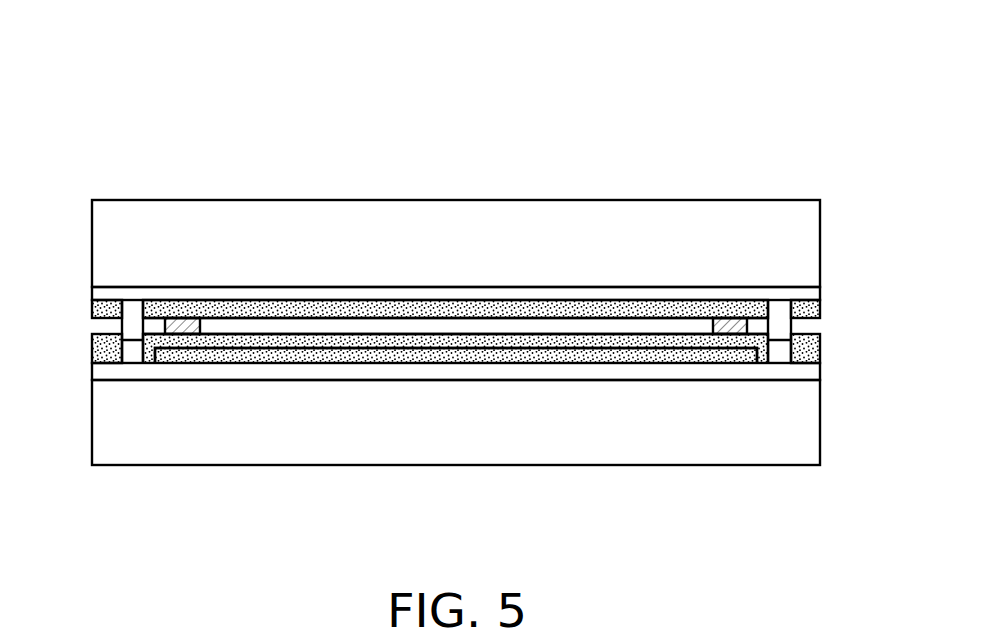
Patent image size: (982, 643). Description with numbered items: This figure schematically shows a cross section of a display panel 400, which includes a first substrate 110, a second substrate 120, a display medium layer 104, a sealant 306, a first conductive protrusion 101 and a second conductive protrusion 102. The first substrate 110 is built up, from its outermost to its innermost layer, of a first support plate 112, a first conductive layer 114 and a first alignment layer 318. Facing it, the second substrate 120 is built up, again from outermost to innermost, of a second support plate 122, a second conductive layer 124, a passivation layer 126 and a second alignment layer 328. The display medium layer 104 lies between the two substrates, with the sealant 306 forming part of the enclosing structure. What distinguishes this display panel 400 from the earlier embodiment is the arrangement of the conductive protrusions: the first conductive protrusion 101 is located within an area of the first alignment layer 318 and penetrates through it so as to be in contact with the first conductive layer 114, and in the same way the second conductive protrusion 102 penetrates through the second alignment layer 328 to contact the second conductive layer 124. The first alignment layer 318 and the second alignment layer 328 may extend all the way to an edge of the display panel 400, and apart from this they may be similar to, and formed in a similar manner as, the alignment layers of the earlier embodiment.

The first conductive protrusion 101 is at (132, 325).
The second conductive protrusion 102 is at (132, 353).
The display medium layer 104 is at (442, 327).
The first substrate 110 is at (488, 263).
The first support plate 112 is at (805, 225).
The first conductive layer 114 is at (802, 295).
The second substrate 120 is at (498, 263).
The second support plate 122 is at (805, 425).
The second conductive layer 124 is at (805, 372).
The passivation layer 126 is at (740, 357).
The sealant 306 is at (795, 325).
The first alignment layer 318 is at (372, 310).
The second alignment layer 328 is at (513, 342).
The display panel 400 is at (469, 283).